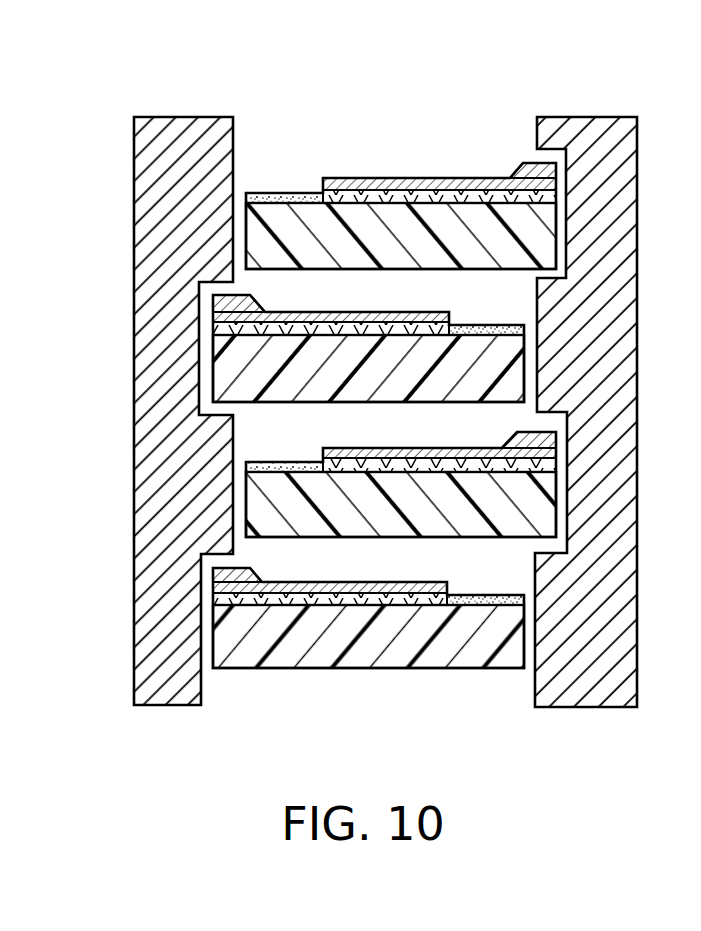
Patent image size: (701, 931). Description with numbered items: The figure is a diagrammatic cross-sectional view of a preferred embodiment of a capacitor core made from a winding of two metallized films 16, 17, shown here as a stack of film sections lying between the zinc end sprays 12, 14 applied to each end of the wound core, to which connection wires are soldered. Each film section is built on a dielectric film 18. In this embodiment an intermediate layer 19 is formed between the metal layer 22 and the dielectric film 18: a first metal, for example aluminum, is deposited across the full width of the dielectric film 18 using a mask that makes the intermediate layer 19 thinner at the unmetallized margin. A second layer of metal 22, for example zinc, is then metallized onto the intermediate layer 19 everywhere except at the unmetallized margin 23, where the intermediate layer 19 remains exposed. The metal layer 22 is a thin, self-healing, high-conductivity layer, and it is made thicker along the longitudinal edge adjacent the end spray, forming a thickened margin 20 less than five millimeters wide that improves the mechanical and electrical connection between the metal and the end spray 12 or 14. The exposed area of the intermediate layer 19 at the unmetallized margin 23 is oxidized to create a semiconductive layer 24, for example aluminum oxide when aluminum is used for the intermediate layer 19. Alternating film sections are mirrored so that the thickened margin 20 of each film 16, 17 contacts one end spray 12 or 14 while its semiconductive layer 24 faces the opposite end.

The zinc end spray 12 is at (637, 478).
The zinc end spray 14 is at (134, 452).
The metallized film 16 is at (384, 388).
The metallized film 17 is at (473, 678).
The dielectric film 18 is at (424, 248).
The intermediate layer 19 is at (556, 198).
The thickened margin 20 is at (540, 163).
The metal layer 22 is at (412, 178).
The unmetallized margin 23 is at (246, 167).
The semiconductive layer 24 is at (275, 197).